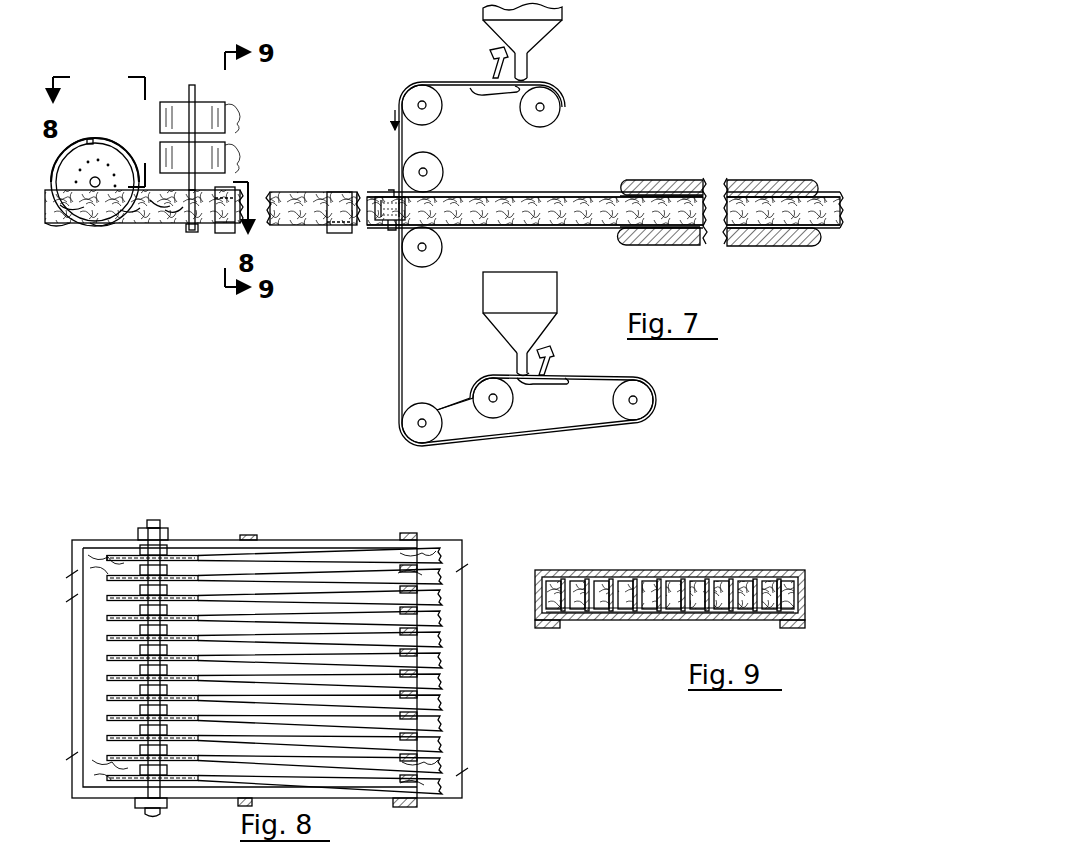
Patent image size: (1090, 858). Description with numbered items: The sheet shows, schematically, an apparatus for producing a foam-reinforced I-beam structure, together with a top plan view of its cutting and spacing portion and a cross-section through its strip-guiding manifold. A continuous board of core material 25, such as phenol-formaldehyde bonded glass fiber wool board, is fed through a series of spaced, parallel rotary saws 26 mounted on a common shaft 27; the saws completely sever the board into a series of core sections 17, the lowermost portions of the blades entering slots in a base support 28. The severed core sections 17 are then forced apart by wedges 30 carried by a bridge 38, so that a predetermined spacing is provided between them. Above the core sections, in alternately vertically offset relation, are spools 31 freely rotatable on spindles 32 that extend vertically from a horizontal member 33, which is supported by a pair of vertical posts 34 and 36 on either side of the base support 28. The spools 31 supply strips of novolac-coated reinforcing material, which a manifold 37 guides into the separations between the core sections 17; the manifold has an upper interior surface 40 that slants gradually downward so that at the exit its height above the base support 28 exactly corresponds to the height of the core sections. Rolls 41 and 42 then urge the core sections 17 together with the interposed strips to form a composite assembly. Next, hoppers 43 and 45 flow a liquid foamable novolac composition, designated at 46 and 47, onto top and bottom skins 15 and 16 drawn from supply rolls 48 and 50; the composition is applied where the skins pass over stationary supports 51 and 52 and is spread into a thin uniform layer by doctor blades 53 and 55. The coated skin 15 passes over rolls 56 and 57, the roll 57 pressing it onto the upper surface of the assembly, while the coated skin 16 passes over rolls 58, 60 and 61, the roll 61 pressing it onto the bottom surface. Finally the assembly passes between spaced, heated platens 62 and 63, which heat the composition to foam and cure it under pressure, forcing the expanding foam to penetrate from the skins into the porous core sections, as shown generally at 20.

In FIG. 7, the top skin 15 is at (447, 88).
In FIG. 7, the bottom skin 16 is at (527, 410).
In FIG. 7, the core sections 17 is at (162, 217).
In FIG. 8, the core sections 17 is at (310, 586).
In FIG. 9, the core sections 17 is at (733, 583).
In FIG. 7, the foam penetration region 20 is at (686, 190).
In FIG. 7, the continuous board of core material 25 is at (50, 223).
In FIG. 8, the continuous board of core material 25 is at (92, 554).
In FIG. 7, the rotary saws 26 is at (84, 140).
In FIG. 8, the rotary saws 26 is at (190, 598).
In FIG. 7, the common shaft 27 is at (87, 187).
In FIG. 8, the common shaft 27 is at (152, 520).
In FIG. 7, the base support 28 is at (157, 202).
In FIG. 8, the base support 28 is at (269, 551).
In FIG. 9, the base support 28 is at (691, 624).
In FIG. 8, the wedges 30 is at (415, 592).
In FIG. 9, the wedges 30 is at (635, 597).
In FIG. 7, the spools 31 is at (162, 151).
In FIG. 7, the spindles 32 is at (196, 90).
In FIG. 7, the horizontal member 33 is at (189, 227).
In FIG. 7, the vertical post 34 is at (192, 232).
In FIG. 8, the vertical post 34 is at (252, 804).
In FIG. 8, the vertical post 36 is at (282, 540).
In FIG. 7, the manifold 37 is at (332, 236).
In FIG. 7, the bridge 38 is at (226, 236).
In FIG. 9, the bridge 38 is at (709, 560).
In FIG. 7, the upper interior surface of manifold 40 is at (328, 190).
In FIG. 9, the upper interior surface of manifold 40 is at (600, 586).
In FIG. 8, the roll 41 is at (420, 522).
In FIG. 9, the roll 41 is at (535, 589).
In FIG. 7, the roll 42 is at (384, 196).
In FIG. 8, the roll 42 is at (400, 808).
In FIG. 9, the roll 42 is at (803, 590).
In FIG. 7, the hopper 43 is at (562, 14).
In FIG. 7, the hopper 45 is at (484, 286).
In FIG. 7, the coating flow onto top skin 46 is at (527, 58).
In FIG. 7, the coating flow onto bottom skin 47 is at (516, 355).
In FIG. 7, the supply roll 48 is at (556, 101).
In FIG. 7, the supply roll 50 is at (488, 412).
In FIG. 7, the stationary support 51 is at (513, 90).
In FIG. 7, the stationary support 52 is at (522, 383).
In FIG. 7, the doctor blade 53 is at (493, 68).
In FIG. 7, the doctor blade 55 is at (552, 358).
In FIG. 7, the roll 56 is at (435, 117).
In FIG. 7, the roll 57 is at (440, 162).
In FIG. 7, the roll 58 is at (615, 401).
In FIG. 7, the roll 60 is at (414, 406).
In FIG. 7, the roll 61 is at (440, 248).
In FIG. 7, the heated platen 62 is at (625, 181).
In FIG. 7, the heated platen 63 is at (620, 238).